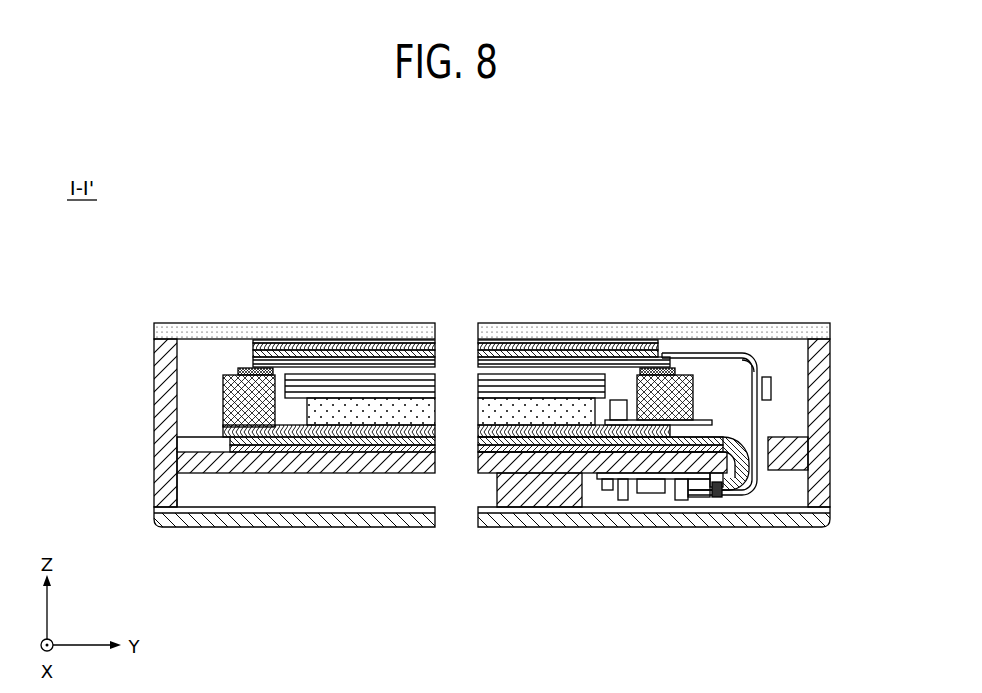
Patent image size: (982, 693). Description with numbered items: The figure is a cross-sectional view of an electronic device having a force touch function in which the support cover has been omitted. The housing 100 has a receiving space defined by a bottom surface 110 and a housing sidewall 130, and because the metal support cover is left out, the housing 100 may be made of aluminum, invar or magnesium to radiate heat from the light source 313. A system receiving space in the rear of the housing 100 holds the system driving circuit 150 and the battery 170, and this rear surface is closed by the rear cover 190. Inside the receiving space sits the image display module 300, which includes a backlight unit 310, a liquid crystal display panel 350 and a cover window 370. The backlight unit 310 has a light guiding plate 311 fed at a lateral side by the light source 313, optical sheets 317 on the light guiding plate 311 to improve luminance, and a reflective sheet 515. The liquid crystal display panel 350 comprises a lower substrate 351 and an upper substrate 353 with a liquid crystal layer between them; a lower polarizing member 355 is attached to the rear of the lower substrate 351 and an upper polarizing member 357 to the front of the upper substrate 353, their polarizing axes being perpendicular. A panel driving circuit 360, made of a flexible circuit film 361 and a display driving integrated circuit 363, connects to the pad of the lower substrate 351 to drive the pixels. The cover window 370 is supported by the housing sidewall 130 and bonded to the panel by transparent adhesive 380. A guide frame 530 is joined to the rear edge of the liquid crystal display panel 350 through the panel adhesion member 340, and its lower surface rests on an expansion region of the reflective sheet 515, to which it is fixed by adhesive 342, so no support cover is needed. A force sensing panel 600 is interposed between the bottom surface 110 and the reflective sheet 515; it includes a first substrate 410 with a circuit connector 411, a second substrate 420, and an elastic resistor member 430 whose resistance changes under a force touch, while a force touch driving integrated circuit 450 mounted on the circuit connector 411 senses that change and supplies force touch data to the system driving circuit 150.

The housing 100 is at (267, 611).
The bottom surface 110 is at (268, 462).
The housing sidewall 130 is at (190, 438).
The system driving circuit 150 is at (653, 508).
The battery 170 is at (330, 500).
The rear cover 190 is at (163, 518).
The image display module 300 is at (218, 193).
The backlight unit 310 is at (495, 244).
The light guiding plate 311 is at (540, 410).
The light source 313 is at (622, 410).
The optical sheets 317 is at (510, 377).
The panel adhesion member 340 is at (247, 368).
The adhesive 342 is at (223, 432).
The liquid crystal display panel 350 is at (307, 244).
The lower substrate 351 is at (373, 352).
The upper substrate 353 is at (338, 345).
The lower polarizing member 355 is at (410, 362).
The upper polarizing member 357 is at (303, 340).
The panel driving circuit 360 is at (742, 244).
The flexible circuit film 361 is at (750, 357).
The display driving integrated circuit 363 is at (767, 377).
The cover window 370 is at (264, 327).
The transparent adhesive 380 is at (665, 352).
The first substrate 410 is at (400, 442).
The circuit connector 411 is at (735, 470).
The second substrate 420 is at (557, 448).
The elastic resistor member 430 is at (513, 448).
The force touch driving integrated circuit 450 is at (735, 485).
The reflective sheet 515 is at (560, 430).
The guide frame 530 is at (688, 377).
The force sensing panel 600 is at (573, 603).